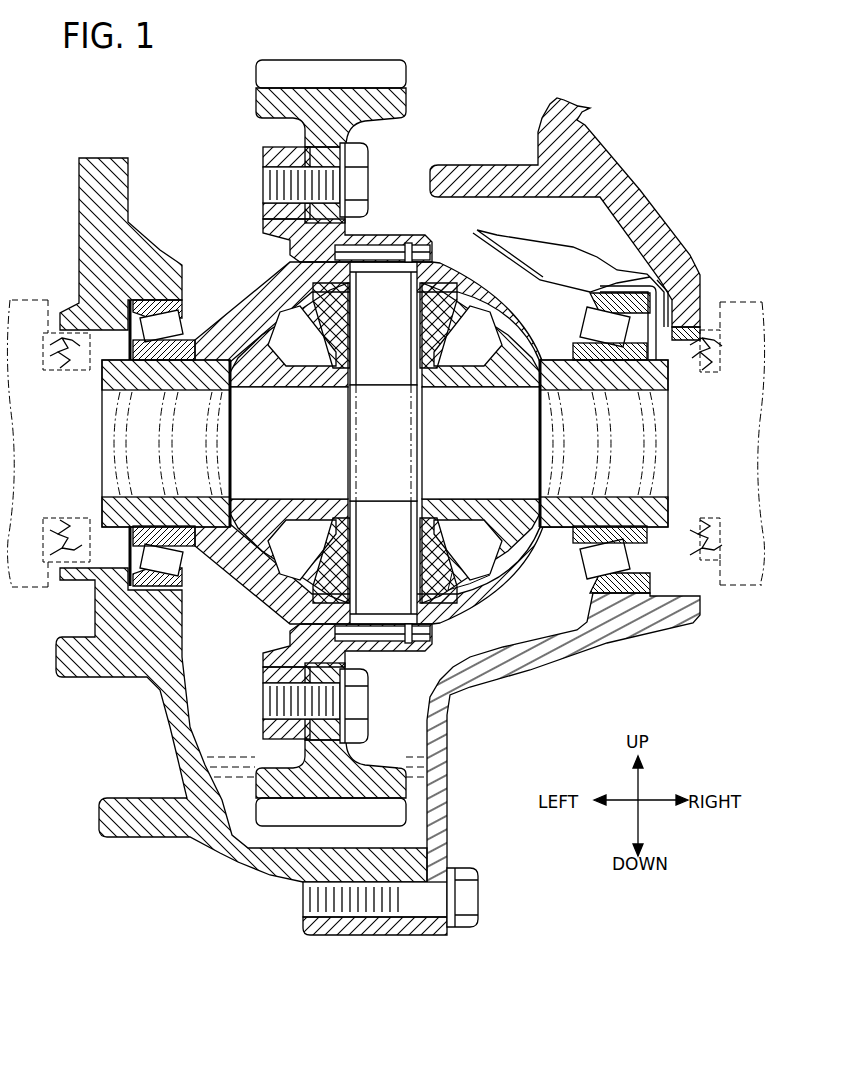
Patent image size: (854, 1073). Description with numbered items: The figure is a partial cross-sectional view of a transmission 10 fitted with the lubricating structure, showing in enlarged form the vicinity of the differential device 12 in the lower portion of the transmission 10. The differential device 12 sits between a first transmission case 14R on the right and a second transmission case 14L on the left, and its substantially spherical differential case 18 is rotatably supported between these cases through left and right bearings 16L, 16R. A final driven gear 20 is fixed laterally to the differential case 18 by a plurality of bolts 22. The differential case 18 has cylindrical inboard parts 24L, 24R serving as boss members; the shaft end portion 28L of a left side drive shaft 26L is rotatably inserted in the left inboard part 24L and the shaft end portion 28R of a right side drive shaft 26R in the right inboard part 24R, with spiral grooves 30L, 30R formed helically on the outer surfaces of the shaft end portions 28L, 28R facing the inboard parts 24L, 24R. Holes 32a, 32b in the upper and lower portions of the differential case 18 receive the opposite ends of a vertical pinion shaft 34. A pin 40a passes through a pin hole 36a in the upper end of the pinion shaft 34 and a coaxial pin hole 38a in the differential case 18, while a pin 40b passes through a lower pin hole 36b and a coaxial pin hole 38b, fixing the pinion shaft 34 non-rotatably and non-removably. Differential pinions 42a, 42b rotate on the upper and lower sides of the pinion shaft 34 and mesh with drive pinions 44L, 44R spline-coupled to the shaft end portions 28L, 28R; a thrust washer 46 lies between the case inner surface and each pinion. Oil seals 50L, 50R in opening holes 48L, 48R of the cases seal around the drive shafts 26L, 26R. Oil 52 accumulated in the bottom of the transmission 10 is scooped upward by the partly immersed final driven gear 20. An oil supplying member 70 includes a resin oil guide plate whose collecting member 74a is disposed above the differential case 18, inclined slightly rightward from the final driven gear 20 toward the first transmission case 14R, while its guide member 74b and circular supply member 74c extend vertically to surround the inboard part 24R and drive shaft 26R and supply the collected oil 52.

The transmission 10 is at (692, 60).
The differential device 12 is at (413, 167).
The second transmission case 14L is at (92, 190).
The first transmission case 14R is at (577, 160).
The left bearing 16L is at (143, 592).
The right bearing 16R is at (628, 597).
The differential case 18 is at (538, 547).
The final driven gear 20 is at (362, 86).
The bolt 22 is at (366, 163).
The left side inboard part 24L is at (122, 510).
The right side inboard part 24R is at (652, 512).
The left side drive shaft 26L is at (26, 300).
The right side drive shaft 26R is at (735, 302).
The shaft end portion of left side drive shaft 28L is at (135, 437).
The shaft end portion of right side drive shaft 28R is at (635, 437).
The spiral groove 30L is at (113, 463).
The spiral groove 30R is at (655, 463).
The hole 32a is at (354, 270).
The hole 32b is at (356, 616).
The pinion shaft 34 is at (403, 450).
The pin hole 36a is at (409, 260).
The pin hole 36b is at (410, 643).
The pin hole 38a is at (300, 252).
The pin hole 38b is at (300, 633).
The pin 40a is at (393, 245).
The pin 40b is at (392, 642).
The differential pinion 42a is at (345, 332).
The differential pinion 42b is at (345, 556).
The drive pinion 44L is at (283, 388).
The drive pinion 44R is at (487, 388).
The thrust washer 46 is at (538, 556).
The opening hole 48L is at (90, 570).
The opening hole 48R is at (708, 507).
The oil seal 50L is at (43, 353).
The oil seal 50R is at (706, 352).
The oil 52 is at (242, 822).
The oil supplying member 70 is at (592, 294).
The collecting member 74a is at (562, 270).
The guide member 74b is at (665, 300).
The supply member 74c is at (657, 357).